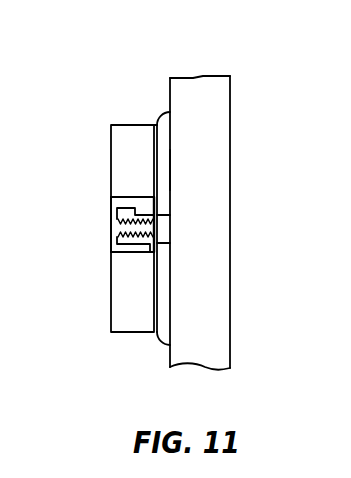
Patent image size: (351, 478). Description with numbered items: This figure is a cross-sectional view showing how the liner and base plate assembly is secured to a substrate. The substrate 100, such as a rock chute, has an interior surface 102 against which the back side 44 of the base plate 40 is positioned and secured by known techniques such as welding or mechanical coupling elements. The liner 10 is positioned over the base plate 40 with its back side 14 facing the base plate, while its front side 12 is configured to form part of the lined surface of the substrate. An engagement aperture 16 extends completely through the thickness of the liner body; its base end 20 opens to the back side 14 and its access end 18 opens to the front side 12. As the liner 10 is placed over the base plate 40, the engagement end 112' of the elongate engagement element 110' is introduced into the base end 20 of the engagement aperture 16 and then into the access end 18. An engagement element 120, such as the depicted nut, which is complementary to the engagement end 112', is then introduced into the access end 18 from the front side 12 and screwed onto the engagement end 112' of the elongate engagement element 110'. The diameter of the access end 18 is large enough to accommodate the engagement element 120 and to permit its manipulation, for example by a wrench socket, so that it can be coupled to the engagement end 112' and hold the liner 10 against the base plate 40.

The liner 10 is at (109, 107).
The front side 12 is at (110, 138).
The back side 14 is at (157, 177).
The engagement aperture 16 is at (103, 212).
The access end 18 is at (122, 253).
The base end 20 is at (149, 252).
The base plate 40 is at (159, 112).
The back side 44 is at (170, 170).
The substrate 100 is at (217, 97).
The interior surface 102 is at (167, 113).
The elongate engagement element 110' is at (235, 229).
The engagement end 112' is at (81, 221).
The engagement element 120 is at (130, 211).